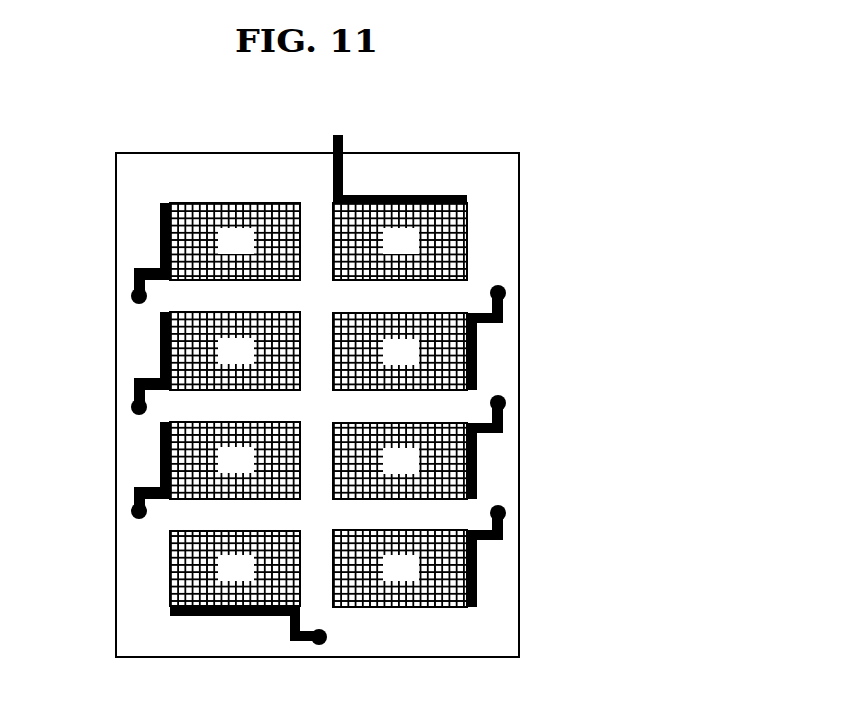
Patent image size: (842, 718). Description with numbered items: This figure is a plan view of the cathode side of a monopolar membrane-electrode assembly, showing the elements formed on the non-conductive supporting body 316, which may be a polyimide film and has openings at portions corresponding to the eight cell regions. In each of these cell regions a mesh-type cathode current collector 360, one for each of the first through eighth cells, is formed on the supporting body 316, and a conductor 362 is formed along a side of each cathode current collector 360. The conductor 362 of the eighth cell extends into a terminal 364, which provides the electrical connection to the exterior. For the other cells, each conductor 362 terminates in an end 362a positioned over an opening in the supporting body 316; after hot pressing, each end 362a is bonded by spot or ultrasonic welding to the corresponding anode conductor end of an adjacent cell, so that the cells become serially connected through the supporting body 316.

The supporting body 316 is at (467, 154).
The cathode current collector 360 is at (200, 203).
The conductor 362 is at (402, 195).
The end of the conductor 362a is at (131, 296).
The terminal 364 is at (338, 135).